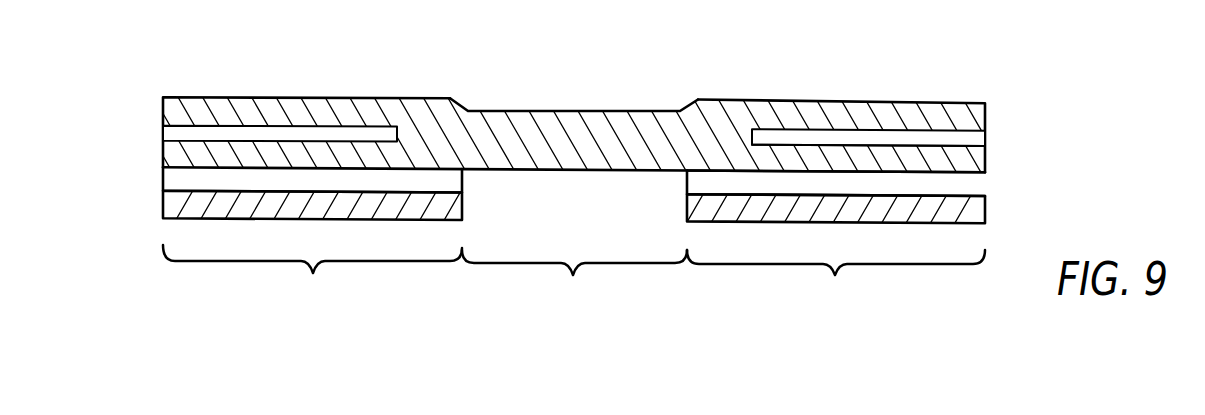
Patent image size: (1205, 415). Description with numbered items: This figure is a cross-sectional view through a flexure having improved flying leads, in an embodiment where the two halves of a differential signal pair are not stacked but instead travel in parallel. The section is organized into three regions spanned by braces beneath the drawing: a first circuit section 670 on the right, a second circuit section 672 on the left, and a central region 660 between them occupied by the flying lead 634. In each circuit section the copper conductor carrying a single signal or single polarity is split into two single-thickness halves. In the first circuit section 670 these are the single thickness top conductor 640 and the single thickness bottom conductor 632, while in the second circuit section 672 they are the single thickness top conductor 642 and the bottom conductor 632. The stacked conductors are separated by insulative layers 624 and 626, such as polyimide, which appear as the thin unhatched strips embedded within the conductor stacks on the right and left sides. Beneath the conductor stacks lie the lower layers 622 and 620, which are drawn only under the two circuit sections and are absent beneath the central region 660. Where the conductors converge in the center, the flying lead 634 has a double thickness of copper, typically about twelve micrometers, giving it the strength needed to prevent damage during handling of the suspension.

The substrate layer 620 is at (986, 212).
The intermediate layer 622 is at (986, 193).
The insulative layer 624 is at (986, 136).
The insulative layer 626 is at (163, 131).
The single thickness bottom conductor 632 is at (986, 157).
The flying lead 634 is at (575, 111).
The single thickness top conductor 640 is at (986, 105).
The single thickness top conductor 642 is at (177, 108).
The central region 660 is at (574, 279).
The first circuit section 670 is at (836, 279).
The second circuit section 672 is at (312, 276).